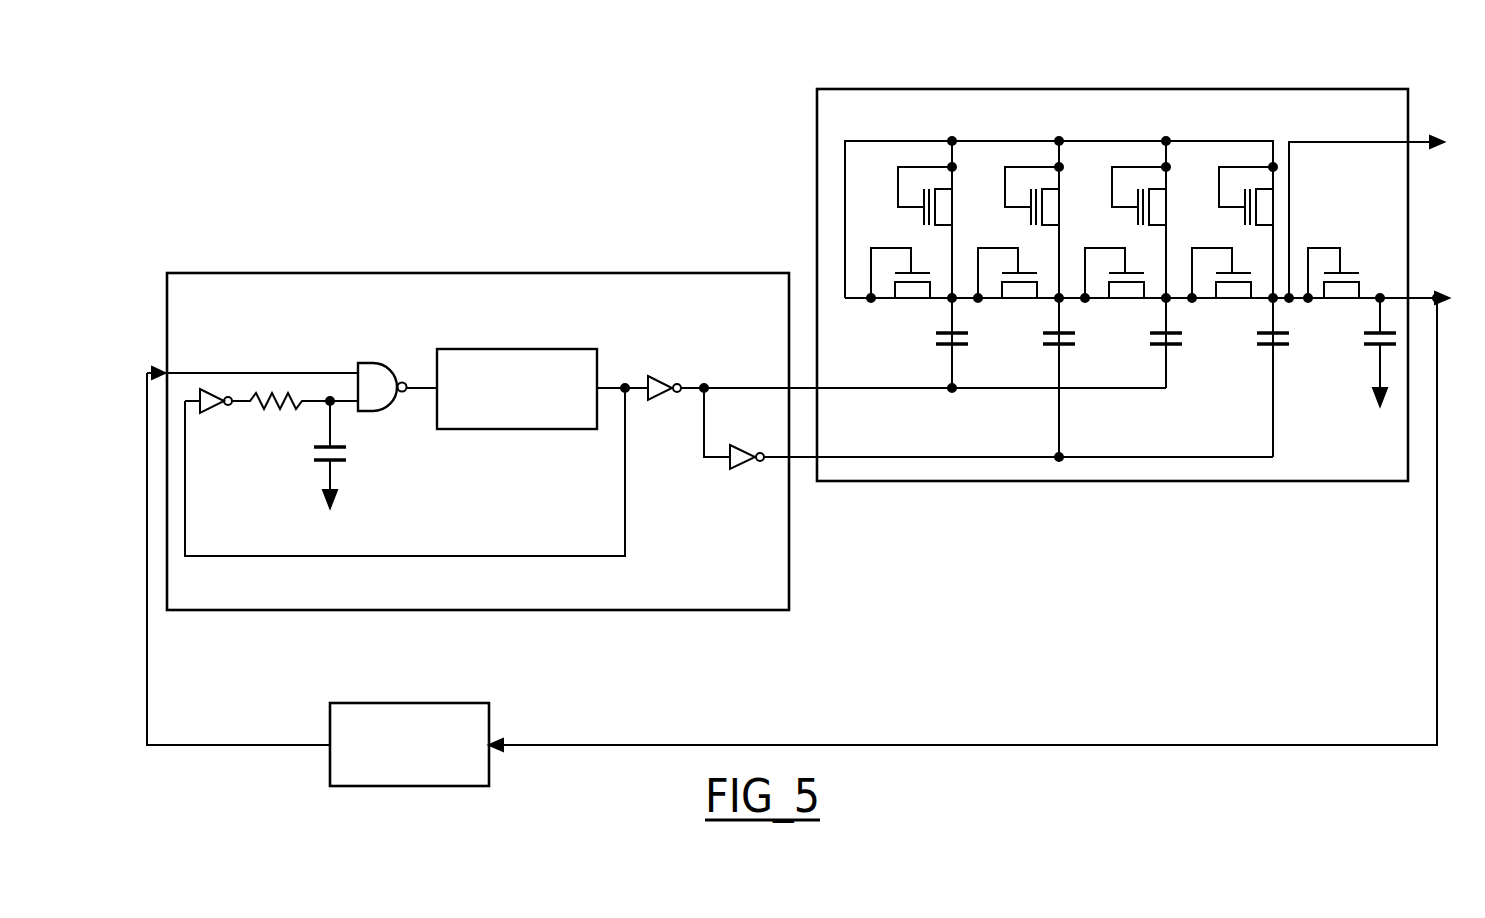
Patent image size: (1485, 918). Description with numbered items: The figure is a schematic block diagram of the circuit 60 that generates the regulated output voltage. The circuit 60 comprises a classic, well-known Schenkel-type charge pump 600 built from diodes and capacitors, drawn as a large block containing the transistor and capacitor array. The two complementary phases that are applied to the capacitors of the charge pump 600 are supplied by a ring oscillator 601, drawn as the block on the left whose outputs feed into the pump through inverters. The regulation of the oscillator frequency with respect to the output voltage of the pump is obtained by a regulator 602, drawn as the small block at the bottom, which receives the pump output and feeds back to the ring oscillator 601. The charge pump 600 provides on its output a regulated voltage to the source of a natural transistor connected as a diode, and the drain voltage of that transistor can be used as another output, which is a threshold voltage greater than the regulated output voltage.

The circuit 60 is at (722, 170).
The charge pump 600 is at (1046, 89).
The ring oscillator 601 is at (449, 273).
The regulator 602 is at (490, 712).